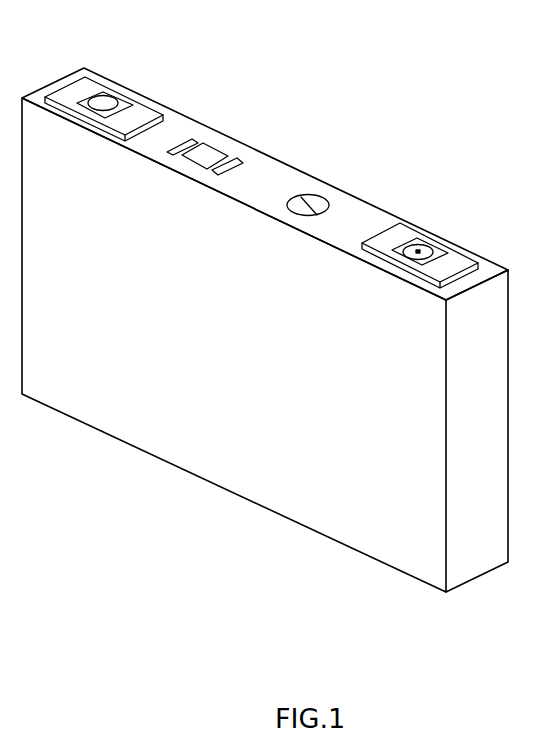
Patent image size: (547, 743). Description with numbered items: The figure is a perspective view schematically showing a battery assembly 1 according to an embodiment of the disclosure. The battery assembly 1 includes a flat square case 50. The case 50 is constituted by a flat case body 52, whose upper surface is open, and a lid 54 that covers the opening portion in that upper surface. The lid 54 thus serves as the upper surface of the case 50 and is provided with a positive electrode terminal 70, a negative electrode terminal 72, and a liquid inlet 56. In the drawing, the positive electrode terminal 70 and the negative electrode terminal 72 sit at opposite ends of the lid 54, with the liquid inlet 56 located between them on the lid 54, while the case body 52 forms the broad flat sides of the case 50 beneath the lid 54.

The battery assembly 1 is at (468, 53).
The case 50 is at (280, 462).
The case body 52 is at (180, 423).
The lid 54 is at (272, 152).
The liquid inlet 56 is at (208, 153).
The positive electrode terminal 70 is at (427, 248).
The negative electrode terminal 72 is at (110, 100).